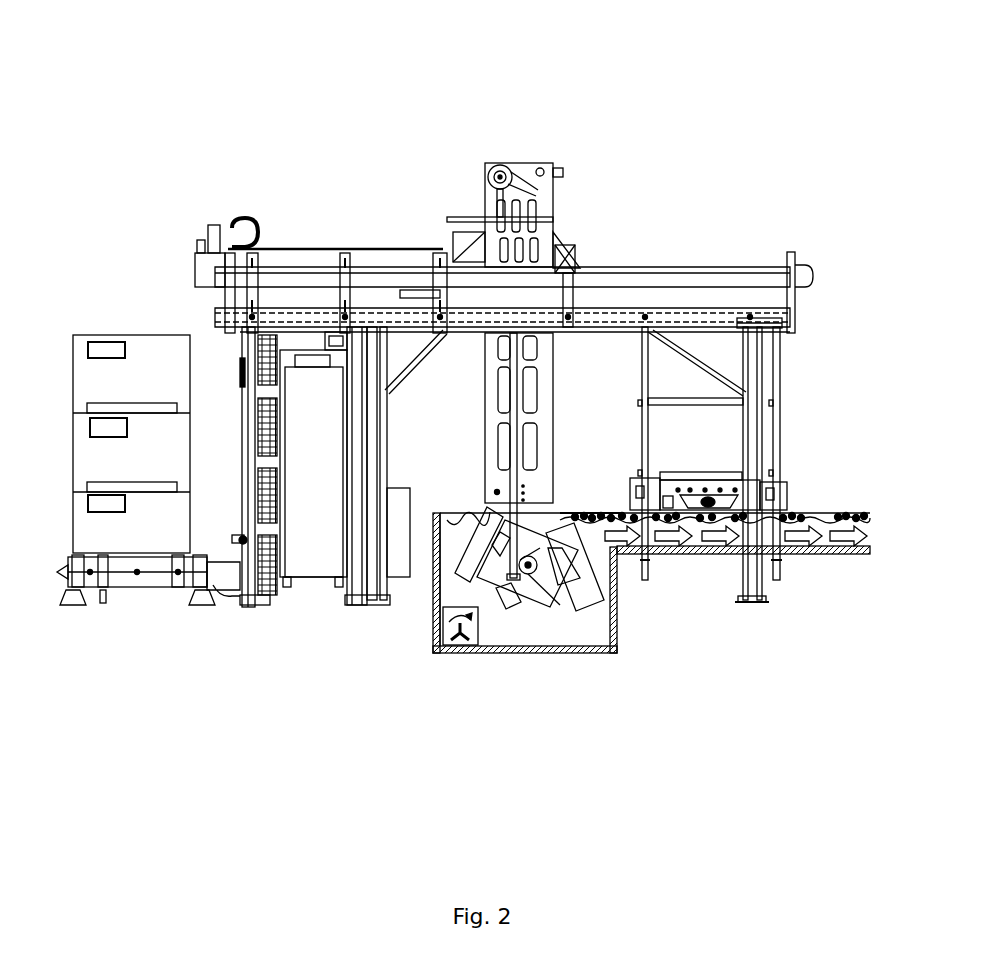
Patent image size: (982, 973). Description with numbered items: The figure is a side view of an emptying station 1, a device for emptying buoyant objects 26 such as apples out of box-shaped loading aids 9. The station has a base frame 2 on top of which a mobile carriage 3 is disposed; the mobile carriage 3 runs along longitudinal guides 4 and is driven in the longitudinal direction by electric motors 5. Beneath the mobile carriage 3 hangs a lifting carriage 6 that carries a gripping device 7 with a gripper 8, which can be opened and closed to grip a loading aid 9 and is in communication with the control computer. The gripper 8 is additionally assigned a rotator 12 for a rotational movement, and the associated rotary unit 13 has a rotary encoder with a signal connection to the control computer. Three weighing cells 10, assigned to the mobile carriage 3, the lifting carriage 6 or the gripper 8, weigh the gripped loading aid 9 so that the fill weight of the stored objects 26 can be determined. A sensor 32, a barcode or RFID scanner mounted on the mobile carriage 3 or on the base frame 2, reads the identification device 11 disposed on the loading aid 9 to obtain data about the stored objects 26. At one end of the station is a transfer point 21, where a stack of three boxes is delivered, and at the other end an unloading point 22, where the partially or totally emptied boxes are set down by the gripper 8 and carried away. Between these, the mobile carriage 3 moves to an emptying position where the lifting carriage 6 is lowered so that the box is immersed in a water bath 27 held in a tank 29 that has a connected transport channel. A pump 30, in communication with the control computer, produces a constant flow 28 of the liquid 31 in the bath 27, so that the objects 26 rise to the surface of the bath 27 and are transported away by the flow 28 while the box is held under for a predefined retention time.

The emptying station 1 is at (232, 100).
The base frame 2 is at (750, 620).
The mobile carriage 3 is at (482, 160).
The longitudinal guides 4 is at (265, 270).
The motors 5 is at (204, 225).
The lifting carriage 6 is at (568, 252).
The gripping device 7 is at (529, 625).
The gripper 8 is at (508, 600).
The loading aid 9 is at (130, 385).
The weighing cells 10 is at (533, 410).
The identification device 11 is at (93, 353).
The rotator 12 is at (566, 650).
The rotary unit 13 is at (527, 566).
The transfer point 21 is at (137, 600).
The unloading point 22 is at (668, 468).
The buoyant objects 26 is at (601, 512).
The water bath 27 is at (594, 584).
The flow 28 is at (708, 540).
The tank 29 is at (434, 586).
The pump 30 is at (470, 650).
The liquid 31 is at (800, 515).
The sensor 32 is at (238, 372).